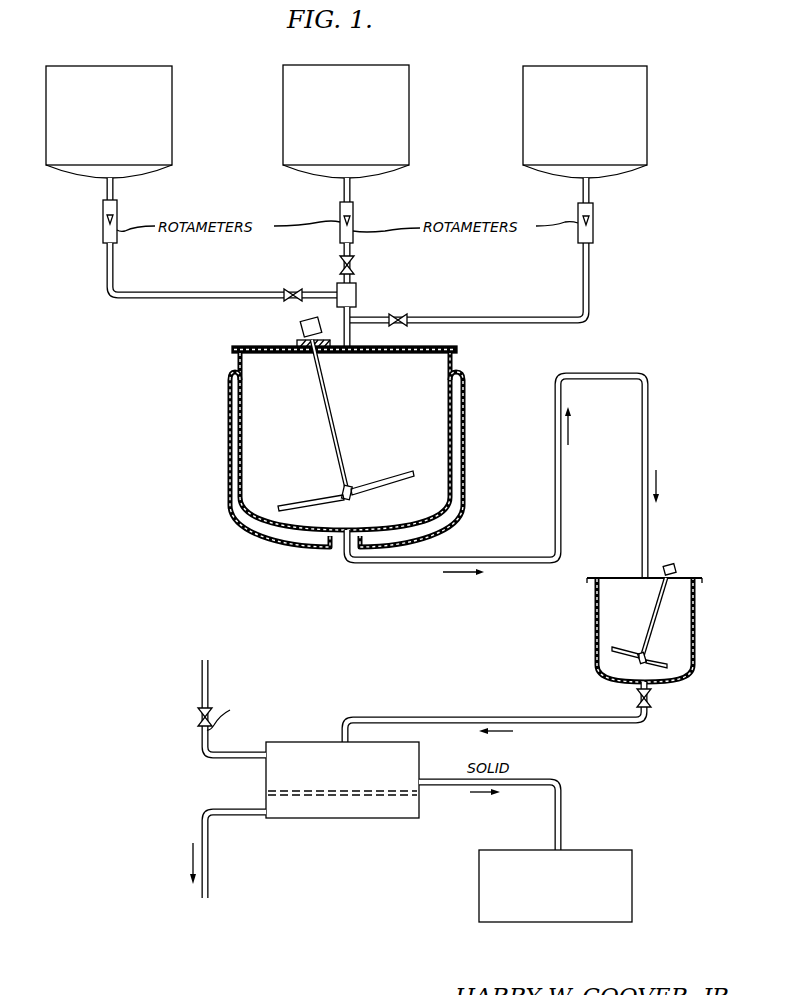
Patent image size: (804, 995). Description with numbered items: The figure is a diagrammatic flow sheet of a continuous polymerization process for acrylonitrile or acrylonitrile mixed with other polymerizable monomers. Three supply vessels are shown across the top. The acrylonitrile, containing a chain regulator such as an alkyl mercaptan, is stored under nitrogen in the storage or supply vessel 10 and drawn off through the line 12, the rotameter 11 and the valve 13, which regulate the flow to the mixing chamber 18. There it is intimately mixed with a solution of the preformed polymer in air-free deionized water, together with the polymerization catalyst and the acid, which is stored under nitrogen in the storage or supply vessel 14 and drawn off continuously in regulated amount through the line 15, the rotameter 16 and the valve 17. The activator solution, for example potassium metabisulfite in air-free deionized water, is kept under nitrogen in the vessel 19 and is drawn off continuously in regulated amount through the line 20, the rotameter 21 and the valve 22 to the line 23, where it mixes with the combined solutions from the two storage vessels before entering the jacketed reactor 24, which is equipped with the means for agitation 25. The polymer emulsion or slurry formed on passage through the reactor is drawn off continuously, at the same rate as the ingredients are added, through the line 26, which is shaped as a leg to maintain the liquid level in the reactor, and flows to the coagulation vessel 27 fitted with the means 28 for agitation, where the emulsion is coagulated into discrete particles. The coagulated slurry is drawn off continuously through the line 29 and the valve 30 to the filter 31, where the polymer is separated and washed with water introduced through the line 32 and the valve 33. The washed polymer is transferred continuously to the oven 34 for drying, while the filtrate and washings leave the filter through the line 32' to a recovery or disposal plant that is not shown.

The storage or supply vessel 10 is at (168, 105).
The rotameter 11 is at (103, 220).
The line 12 is at (107, 266).
The valve 13 is at (295, 290).
The storage or supply vessel 14 is at (404, 120).
The line 15 is at (344, 189).
The rotameter 16 is at (354, 210).
The valve 17 is at (352, 264).
The mixing chamber 18 is at (356, 295).
The vessel 19 is at (637, 124).
The line 20 is at (590, 190).
The rotameter 21 is at (594, 236).
The valve 22 is at (403, 317).
The line 23 is at (352, 335).
The jacketed reactor 24 is at (231, 383).
The means for agitation 25 is at (338, 436).
The line 26 is at (484, 559).
The coagulation vessel 27 is at (697, 630).
The means for agitation 28 is at (655, 619).
The line 29 is at (553, 719).
The valve 30 is at (652, 698).
The filter 31 is at (276, 775).
The line 32 is at (212, 708).
The valve 33 is at (200, 714).
The line 32' is at (215, 875).
The oven 34 is at (625, 866).